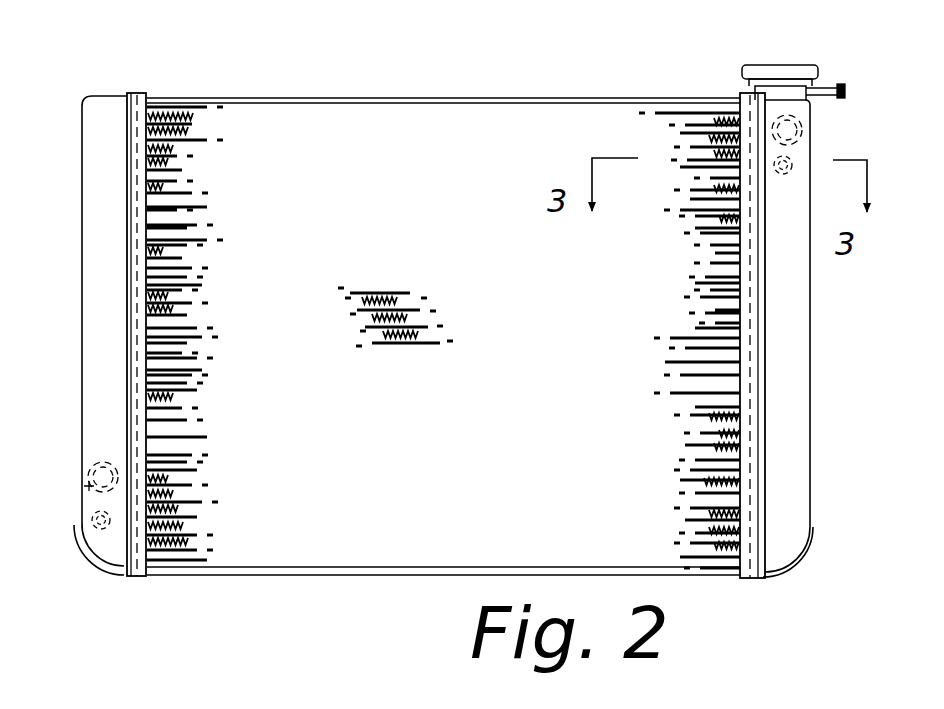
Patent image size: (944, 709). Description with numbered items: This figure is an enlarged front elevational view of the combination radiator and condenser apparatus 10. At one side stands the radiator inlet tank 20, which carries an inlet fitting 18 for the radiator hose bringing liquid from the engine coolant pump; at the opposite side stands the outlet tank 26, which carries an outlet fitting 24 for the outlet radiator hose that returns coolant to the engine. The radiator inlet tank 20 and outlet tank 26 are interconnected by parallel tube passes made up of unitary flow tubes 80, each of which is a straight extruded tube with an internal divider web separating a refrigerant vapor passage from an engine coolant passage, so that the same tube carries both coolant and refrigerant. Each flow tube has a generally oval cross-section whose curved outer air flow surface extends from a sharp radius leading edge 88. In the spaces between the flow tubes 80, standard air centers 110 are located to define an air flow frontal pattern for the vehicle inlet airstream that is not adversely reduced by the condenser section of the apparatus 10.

The combination radiator and condenser apparatus 10 is at (617, 97).
The inlet fitting 18 is at (800, 120).
The radiator inlet tank 20 is at (783, 335).
The outlet fitting 24 is at (86, 489).
The outlet tank 26 is at (83, 273).
The unitary flow tubes 80 is at (193, 203).
The leading edge 88 is at (176, 126).
The air centers 110 is at (152, 103).